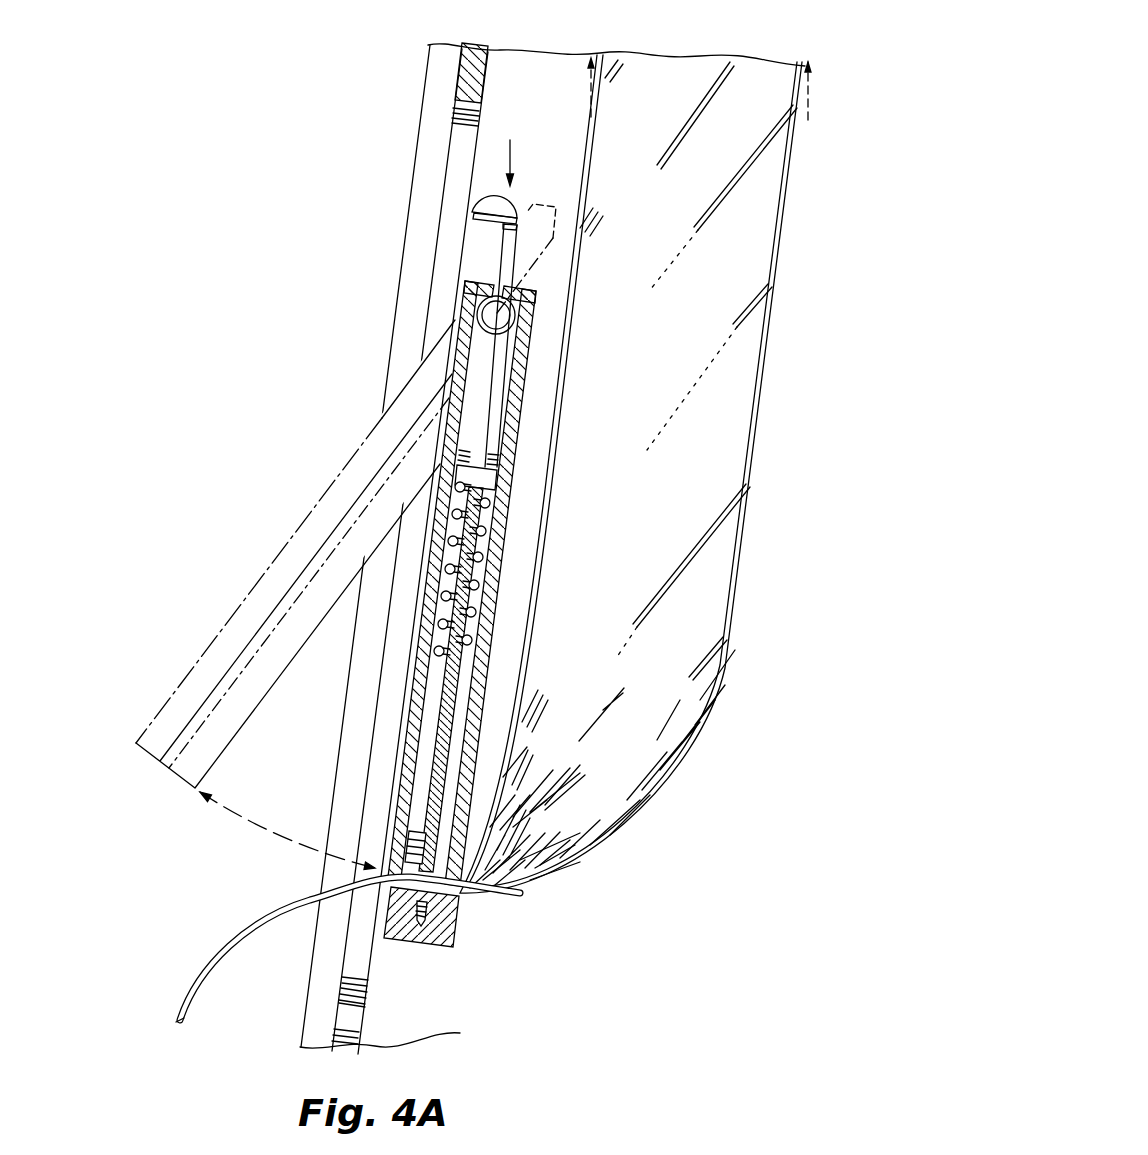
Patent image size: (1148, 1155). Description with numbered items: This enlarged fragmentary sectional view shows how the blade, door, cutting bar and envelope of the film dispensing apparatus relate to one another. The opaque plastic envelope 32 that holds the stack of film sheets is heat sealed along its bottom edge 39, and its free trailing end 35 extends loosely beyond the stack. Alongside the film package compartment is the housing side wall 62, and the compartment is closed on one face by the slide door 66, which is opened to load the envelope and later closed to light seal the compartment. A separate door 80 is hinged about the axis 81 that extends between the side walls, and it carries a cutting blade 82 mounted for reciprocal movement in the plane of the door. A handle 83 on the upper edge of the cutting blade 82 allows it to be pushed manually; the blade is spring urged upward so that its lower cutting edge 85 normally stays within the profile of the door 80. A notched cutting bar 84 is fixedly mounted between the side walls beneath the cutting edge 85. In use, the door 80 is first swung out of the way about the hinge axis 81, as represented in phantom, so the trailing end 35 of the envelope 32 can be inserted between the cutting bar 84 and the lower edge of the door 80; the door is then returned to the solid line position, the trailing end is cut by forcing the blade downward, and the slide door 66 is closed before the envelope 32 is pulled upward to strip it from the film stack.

The envelope 32 is at (732, 440).
The trailing end 35 is at (236, 926).
The bottom edge 39 is at (179, 1016).
The side wall 62 is at (419, 548).
The slide door 66 is at (472, 90).
The door 80 is at (451, 435).
The hinge axis 81 is at (486, 302).
The cutting blade 82 is at (440, 752).
The handle 83 is at (493, 193).
The cutting bar 84 is at (448, 922).
The cutting edge 85 is at (426, 853).